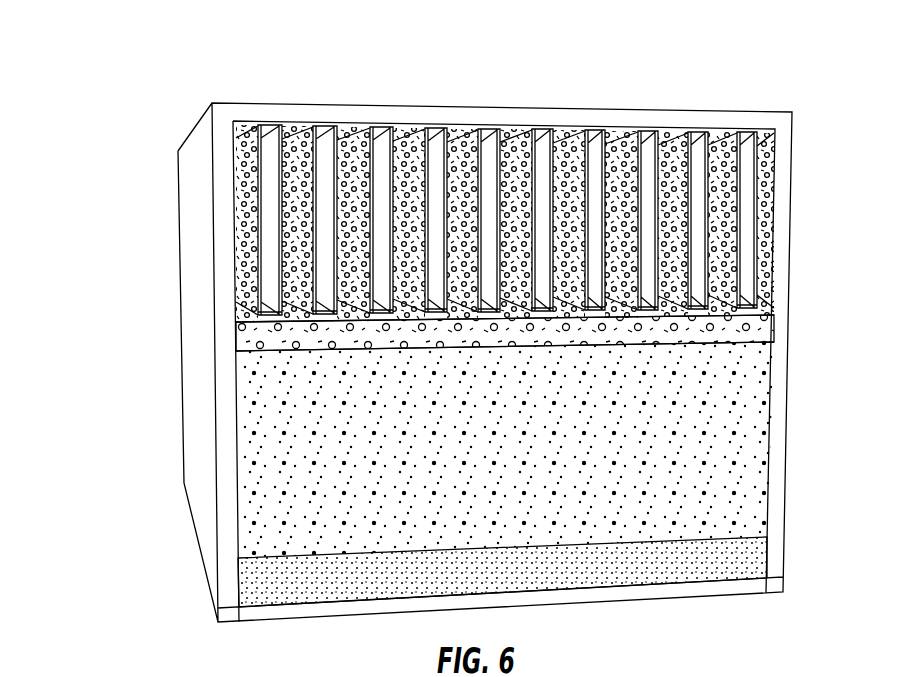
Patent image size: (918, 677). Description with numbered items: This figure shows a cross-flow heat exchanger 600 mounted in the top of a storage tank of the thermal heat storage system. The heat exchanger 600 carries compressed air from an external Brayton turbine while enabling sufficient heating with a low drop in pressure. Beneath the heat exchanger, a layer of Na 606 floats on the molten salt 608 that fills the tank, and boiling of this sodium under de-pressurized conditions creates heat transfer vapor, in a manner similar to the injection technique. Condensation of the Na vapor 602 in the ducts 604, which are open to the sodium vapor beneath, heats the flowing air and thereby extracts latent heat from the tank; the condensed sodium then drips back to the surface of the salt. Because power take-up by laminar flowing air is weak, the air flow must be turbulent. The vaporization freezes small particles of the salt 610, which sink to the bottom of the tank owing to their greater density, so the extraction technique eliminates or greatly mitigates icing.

The cross-flow heat exchanger 600 is at (140, 125).
The Na vapor 602 is at (565, 157).
The ducts 604 is at (641, 164).
The Na 606 is at (753, 331).
The molten salt 608 is at (722, 425).
The salt particles 610 is at (746, 557).